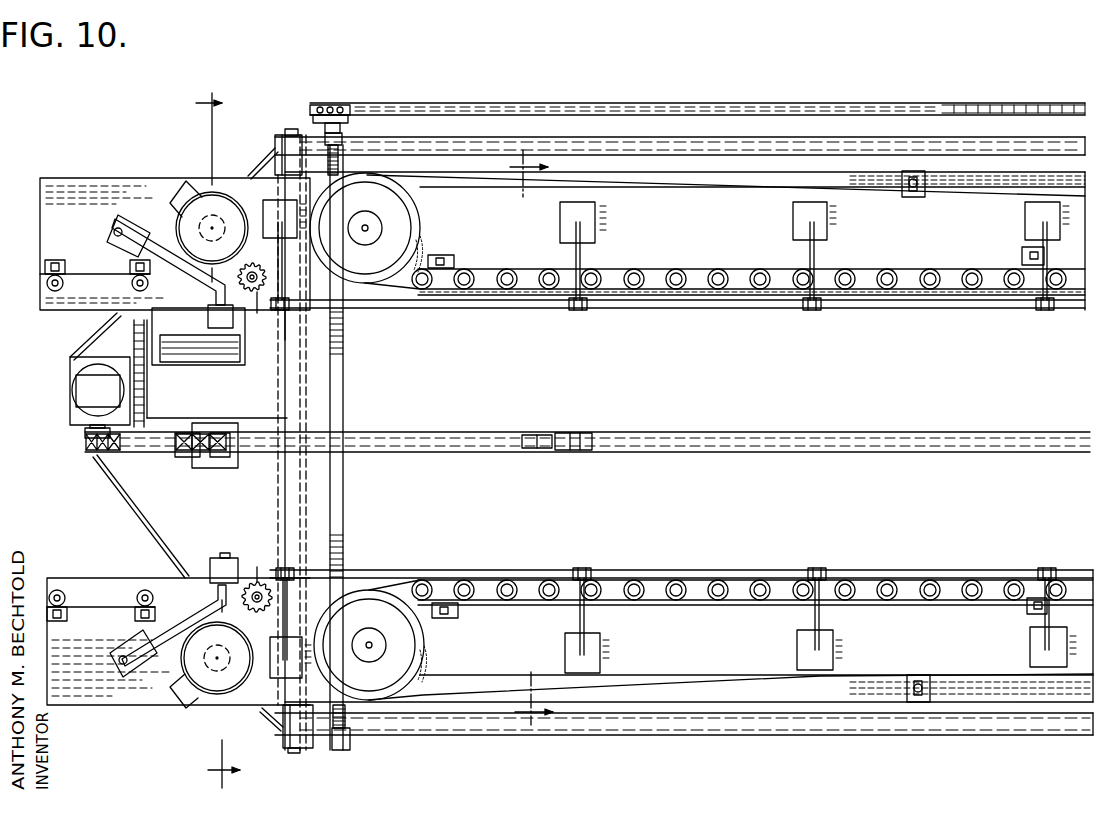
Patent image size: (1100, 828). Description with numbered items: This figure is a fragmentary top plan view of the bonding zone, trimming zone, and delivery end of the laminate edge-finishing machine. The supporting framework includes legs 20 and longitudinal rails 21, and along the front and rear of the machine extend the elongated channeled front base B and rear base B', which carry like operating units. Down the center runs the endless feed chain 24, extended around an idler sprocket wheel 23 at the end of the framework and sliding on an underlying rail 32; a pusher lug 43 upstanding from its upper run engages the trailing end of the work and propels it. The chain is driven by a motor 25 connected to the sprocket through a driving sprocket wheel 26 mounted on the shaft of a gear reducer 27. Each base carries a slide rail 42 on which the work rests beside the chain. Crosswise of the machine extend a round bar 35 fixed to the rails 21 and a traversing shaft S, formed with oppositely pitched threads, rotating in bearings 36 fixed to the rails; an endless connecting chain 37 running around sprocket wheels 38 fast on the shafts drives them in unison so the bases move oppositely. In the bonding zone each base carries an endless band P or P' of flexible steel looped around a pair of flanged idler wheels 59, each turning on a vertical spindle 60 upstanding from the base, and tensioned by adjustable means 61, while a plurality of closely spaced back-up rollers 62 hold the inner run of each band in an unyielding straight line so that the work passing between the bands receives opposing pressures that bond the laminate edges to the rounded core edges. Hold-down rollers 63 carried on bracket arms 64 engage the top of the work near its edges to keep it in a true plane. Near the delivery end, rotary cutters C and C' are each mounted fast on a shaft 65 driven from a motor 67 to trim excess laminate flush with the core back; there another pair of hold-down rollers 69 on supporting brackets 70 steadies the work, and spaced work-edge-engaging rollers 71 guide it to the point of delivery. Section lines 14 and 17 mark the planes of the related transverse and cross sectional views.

The section line 14— 14 is at (543, 437).
The section line 17— 17 is at (230, 440).
The legs 20 is at (276, 152).
The longitudinal rails 21 is at (734, 136).
The idler sprocket wheel 23 is at (190, 459).
The feed chain 24 is at (530, 434).
The motor 25 is at (200, 366).
The driving sprocket wheel 26 is at (90, 456).
The gear reducer 27 is at (82, 393).
The rail 32 is at (648, 431).
The round bars 35 is at (290, 389).
The bearings 36 is at (344, 144).
The connecting chain 37 is at (571, 96).
The sprocket wheels 38 is at (333, 105).
The slide rail 42 is at (717, 308).
The pusher lug 43 is at (568, 433).
The flanged idler wheels 59 is at (415, 210).
The pulley shaft 60 is at (366, 225).
The adjustable means 61 is at (902, 182).
The back-up rollers 62 is at (546, 271).
The hold-down rollers 63 is at (280, 312).
The bracket arms 64 is at (277, 222).
The shaft 65 is at (259, 266).
The motor 67 is at (214, 193).
The hold-down rollers 69 is at (208, 318).
The supporting bracket 70 is at (190, 275).
The work-edge-engaging rollers 71 is at (136, 277).
The front base B is at (175, 229).
The rear base B' is at (178, 657).
The endless band P is at (685, 241).
The endless band P' is at (689, 636).
The traversing shaft S is at (344, 387).
The rotary cutter C is at (261, 313).
The rotary cutter C' is at (263, 565).